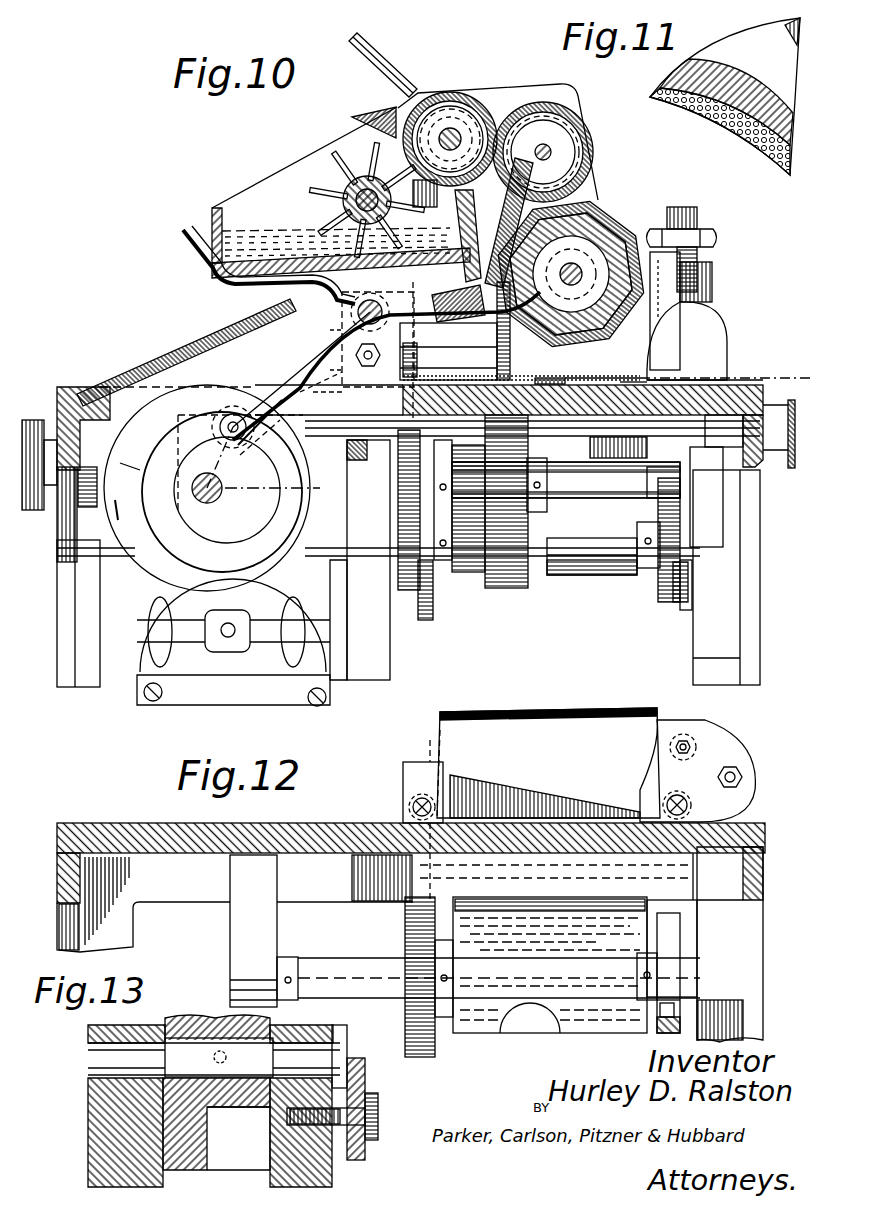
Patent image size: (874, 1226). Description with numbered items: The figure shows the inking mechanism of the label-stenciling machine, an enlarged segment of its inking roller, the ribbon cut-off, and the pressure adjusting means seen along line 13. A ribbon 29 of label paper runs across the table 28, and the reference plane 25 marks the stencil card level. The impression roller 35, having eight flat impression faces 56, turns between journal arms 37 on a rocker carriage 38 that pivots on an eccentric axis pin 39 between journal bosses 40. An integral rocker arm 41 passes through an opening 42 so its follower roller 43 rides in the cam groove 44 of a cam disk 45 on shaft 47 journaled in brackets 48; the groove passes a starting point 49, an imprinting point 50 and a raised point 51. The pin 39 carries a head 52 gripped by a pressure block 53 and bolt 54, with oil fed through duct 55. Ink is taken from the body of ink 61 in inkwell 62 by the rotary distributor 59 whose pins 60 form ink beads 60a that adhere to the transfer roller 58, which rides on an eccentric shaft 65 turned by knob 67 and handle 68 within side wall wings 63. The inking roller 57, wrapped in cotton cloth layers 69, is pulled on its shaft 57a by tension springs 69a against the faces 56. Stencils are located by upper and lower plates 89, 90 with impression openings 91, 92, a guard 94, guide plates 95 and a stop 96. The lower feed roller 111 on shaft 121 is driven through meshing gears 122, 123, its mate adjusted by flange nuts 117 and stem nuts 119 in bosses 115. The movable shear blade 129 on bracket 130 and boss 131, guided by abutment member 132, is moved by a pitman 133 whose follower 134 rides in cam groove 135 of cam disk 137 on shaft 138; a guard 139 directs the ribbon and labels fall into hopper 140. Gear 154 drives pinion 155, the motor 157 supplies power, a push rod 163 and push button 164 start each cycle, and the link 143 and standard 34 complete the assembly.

In FIG. 10, the section line 13 is at (361, 286).
In FIG. 10, the stencil card 25 is at (764, 376).
In FIG. 10, the table 28 is at (722, 405).
In FIG. 12, the table 28 is at (358, 830).
In FIG. 10, the ribbon 29 is at (571, 402).
In FIG. 12, the ribbon 29 is at (532, 815).
In FIG. 10, the support standard 34 is at (57, 660).
In FIG. 12, the support standard 34 is at (740, 1010).
In FIG. 10, the impression roller 35 is at (592, 213).
In FIG. 10, the journal arms 37 is at (558, 301).
In FIG. 10, the rocker carriage 38 is at (442, 287).
In FIG. 13, the rocker carriage 38 is at (248, 1100).
In FIG. 10, the axis pin 39 is at (356, 320).
In FIG. 13, the axis pin 39 is at (190, 1045).
In FIG. 10, the journal bosses 40 is at (342, 368).
In FIG. 13, the journal bosses 40 is at (100, 1142).
In FIG. 10, the rocker arm 41 is at (292, 352).
In FIG. 13, the rocker arm 41 is at (207, 1150).
In FIG. 10, the opening 42 is at (118, 393).
In FIG. 10, the follower roller 43 is at (262, 415).
In FIG. 10, the cam groove 44 is at (160, 528).
In FIG. 10, the cam disk 45 is at (127, 483).
In FIG. 10, the shaft 47 is at (200, 508).
In FIG. 10, the brackets 48 is at (232, 510).
In FIG. 10, the starting point 49 is at (240, 447).
In FIG. 10, the imprinting point 50 is at (286, 490).
In FIG. 10, the raised point 51 is at (180, 462).
In FIG. 13, the head 52 is at (340, 1040).
In FIG. 10, the pressure block 53 is at (325, 400).
In FIG. 13, the pressure block 53 is at (365, 1150).
In FIG. 10, the bolt 54 is at (372, 368).
In FIG. 13, the bolt 54 is at (378, 1117).
In FIG. 10, the duct 55 is at (228, 288).
In FIG. 13, the duct 55 is at (228, 1057).
In FIG. 10, the impression faces 56 is at (640, 235).
In FIG. 10, the inking roller 57 is at (575, 128).
In FIG. 11, the inking roller 57 is at (716, 58).
In FIG. 10, the shaft 57a is at (552, 152).
In FIG. 10, the transfer roller 58 is at (455, 92).
In FIG. 10, the rotary distributor 59 is at (362, 190).
In FIG. 10, the ink distributing pins 60 is at (330, 198).
In FIG. 10, the ink bead 60a is at (447, 231).
In FIG. 10, the body of ink 61 is at (262, 225).
In FIG. 10, the inkwell 62 is at (212, 215).
In FIG. 10, the side wall wings 63 is at (512, 93).
In FIG. 10, the eccentric shaft 65 is at (458, 132).
In FIG. 10, the knob 67 is at (440, 128).
In FIG. 10, the handle 68 is at (385, 68).
In FIG. 11, the cloth layers 69 is at (800, 178).
In FIG. 10, the tension springs 69a is at (506, 200).
In FIG. 10, the upper plate 89 is at (640, 378).
In FIG. 10, the lower plate 90 is at (688, 378).
In FIG. 10, the impression opening 91 is at (599, 367).
In FIG. 10, the impression opening 92 is at (592, 378).
In FIG. 10, the guard 94 is at (690, 268).
In FIG. 10, the guide plates 95 is at (712, 324).
In FIG. 10, the stop 96 is at (548, 370).
In FIG. 10, the lower ribbon-feed roller 111 is at (505, 588).
In FIG. 10, the bosses 115 is at (712, 282).
In FIG. 10, the flange nuts 117 is at (700, 228).
In FIG. 10, the stem nuts 119 is at (680, 212).
In FIG. 10, the shaft 121 is at (546, 485).
In FIG. 10, the gear 122 is at (420, 360).
In FIG. 10, the gear 123 is at (406, 592).
In FIG. 12, the movable shear blade 129 is at (612, 712).
In FIG. 12, the bracket 130 is at (748, 800).
In FIG. 12, the boss 131 is at (692, 806).
In FIG. 12, the abutment member 132 is at (410, 770).
In FIG. 10, the pitman 133 is at (684, 612).
In FIG. 12, the pitman 133 is at (668, 905).
In FIG. 12, the follower 134 is at (670, 1010).
In FIG. 10, the cam groove 135 is at (662, 603).
In FIG. 12, the cam groove 135 is at (660, 1036).
In FIG. 12, the cam disk 137 is at (672, 924).
In FIG. 12, the shaft 138 is at (536, 990).
In FIG. 12, the guard 139 is at (470, 712).
In FIG. 12, the receiving hopper 140 is at (575, 1040).
In FIG. 10, the link 143 is at (462, 345).
In FIG. 10, the gear 154 is at (450, 472).
In FIG. 12, the pinion 155 is at (413, 938).
In FIG. 10, the electric motor 157 is at (236, 690).
In FIG. 10, the push rod 163 is at (560, 437).
In FIG. 10, the push button 164 is at (793, 468).